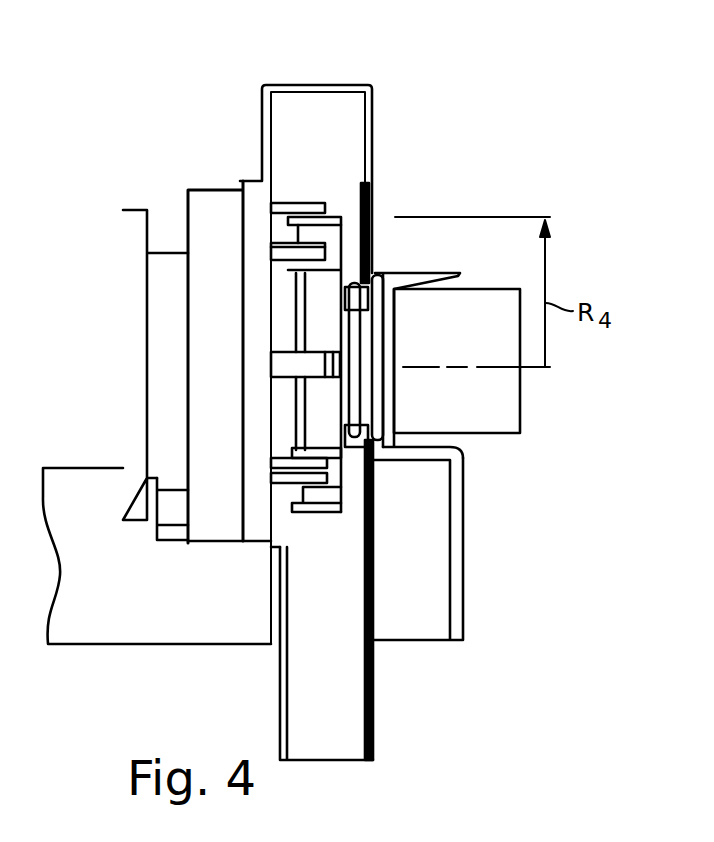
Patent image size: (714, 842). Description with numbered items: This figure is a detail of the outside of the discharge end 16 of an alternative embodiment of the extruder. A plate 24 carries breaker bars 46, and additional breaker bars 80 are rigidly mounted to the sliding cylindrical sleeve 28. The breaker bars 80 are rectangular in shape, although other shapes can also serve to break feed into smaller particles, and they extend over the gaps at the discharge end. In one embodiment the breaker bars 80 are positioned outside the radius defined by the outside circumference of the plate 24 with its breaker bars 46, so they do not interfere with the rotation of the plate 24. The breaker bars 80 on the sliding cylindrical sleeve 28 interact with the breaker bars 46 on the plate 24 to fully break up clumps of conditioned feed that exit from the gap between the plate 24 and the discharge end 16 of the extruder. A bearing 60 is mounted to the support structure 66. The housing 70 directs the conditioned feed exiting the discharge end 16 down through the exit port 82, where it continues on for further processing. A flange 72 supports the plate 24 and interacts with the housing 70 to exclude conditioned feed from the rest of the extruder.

The discharge end 16 is at (138, 210).
The sliding cylindrical sleeve 28 is at (283, 295).
The housing 70 is at (330, 84).
The breaker bars 80 is at (312, 203).
The breaker bars 46 is at (330, 216).
The plate 24 is at (357, 281).
The flange 72 is at (362, 390).
The bearing 60 is at (508, 420).
The support structure 66 is at (467, 502).
The exit port 82 is at (373, 688).